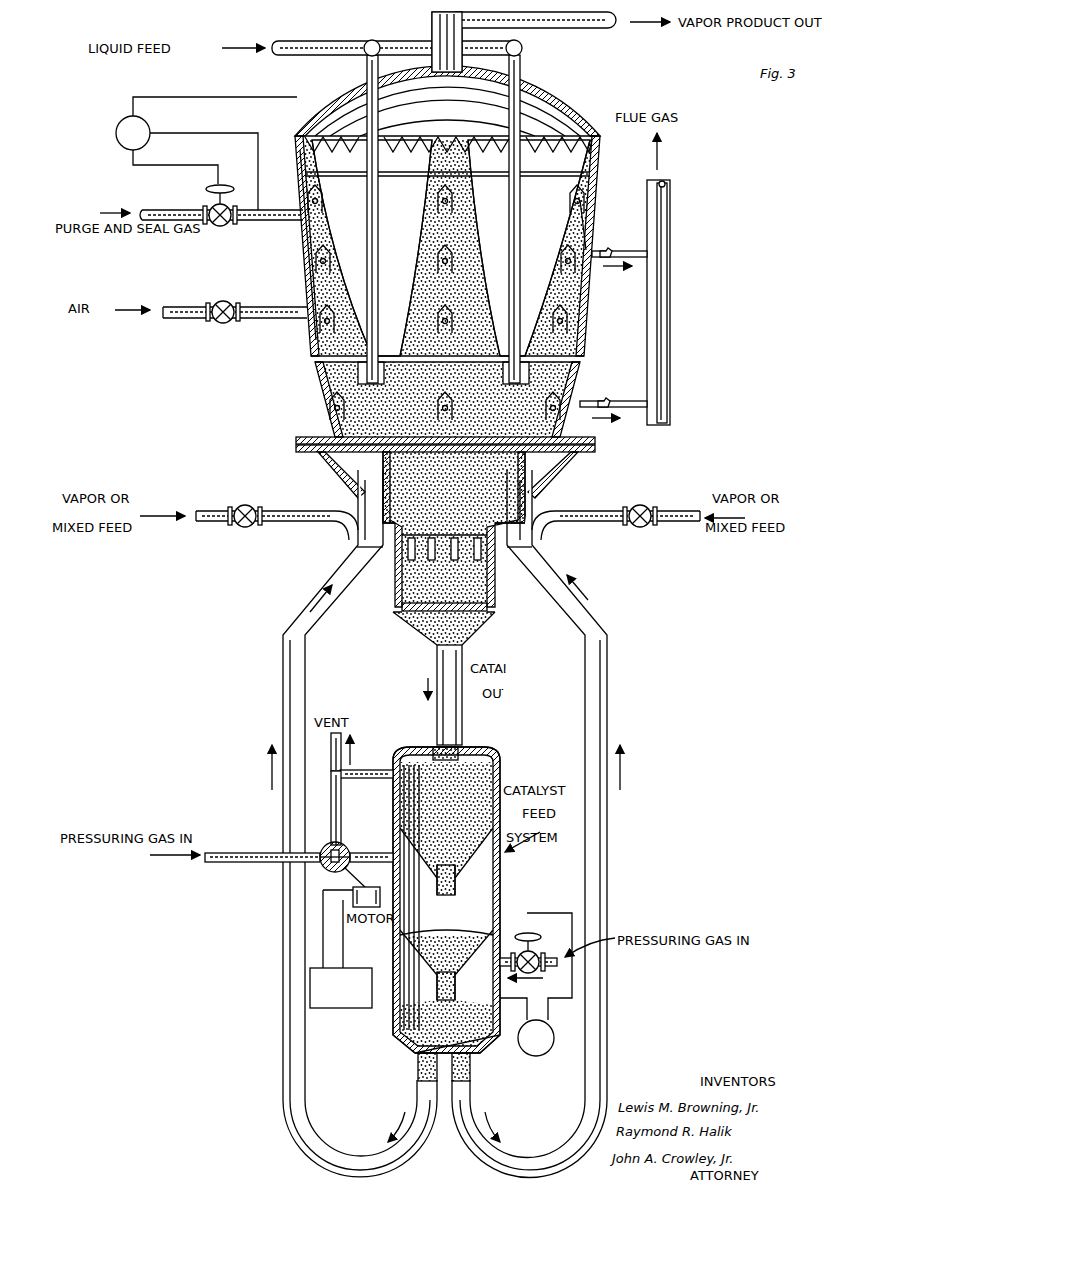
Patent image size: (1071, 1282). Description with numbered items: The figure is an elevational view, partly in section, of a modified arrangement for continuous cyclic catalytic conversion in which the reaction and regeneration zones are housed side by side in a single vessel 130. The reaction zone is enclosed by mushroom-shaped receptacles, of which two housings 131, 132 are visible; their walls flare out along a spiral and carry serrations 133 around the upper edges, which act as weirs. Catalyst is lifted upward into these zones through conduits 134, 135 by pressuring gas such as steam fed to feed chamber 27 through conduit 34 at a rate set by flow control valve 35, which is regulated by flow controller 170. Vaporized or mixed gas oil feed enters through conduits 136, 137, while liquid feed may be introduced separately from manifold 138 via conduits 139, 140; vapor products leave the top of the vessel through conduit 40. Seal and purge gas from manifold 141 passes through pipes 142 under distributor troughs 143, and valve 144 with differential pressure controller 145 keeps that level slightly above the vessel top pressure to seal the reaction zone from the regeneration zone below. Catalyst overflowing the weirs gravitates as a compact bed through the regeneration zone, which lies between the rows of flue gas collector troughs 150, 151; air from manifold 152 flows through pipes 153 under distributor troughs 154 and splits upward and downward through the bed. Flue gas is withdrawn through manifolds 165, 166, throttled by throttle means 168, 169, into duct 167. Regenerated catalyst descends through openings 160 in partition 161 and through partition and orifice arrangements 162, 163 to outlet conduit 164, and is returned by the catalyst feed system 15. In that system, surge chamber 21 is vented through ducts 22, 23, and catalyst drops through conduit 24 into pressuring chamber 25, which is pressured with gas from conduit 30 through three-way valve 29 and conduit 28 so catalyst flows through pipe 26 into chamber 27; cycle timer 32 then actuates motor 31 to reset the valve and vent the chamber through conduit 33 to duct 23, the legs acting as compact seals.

The catalyst feed system 15 is at (500, 762).
The surge chamber 21 is at (400, 820).
The duct 22 is at (362, 770).
The vent 23 is at (331, 748).
The conduit 24 is at (458, 878).
The pressuring chamber 25 is at (402, 943).
The pipe 26 is at (456, 975).
The feed chamber 27 is at (395, 1036).
The conduit 28 is at (380, 853).
The three-way valve 29 is at (330, 845).
The conduit 30 is at (242, 864).
The motor 31 is at (370, 887).
The cycle timer 32 is at (308, 987).
The conduit 33 is at (341, 797).
The conduit 34 is at (508, 958).
The flow control valve 35 is at (542, 945).
The conduit 40 is at (576, 28).
The vessel 130 is at (565, 110).
The mushroom-shaped receptacle 131 is at (596, 150).
The mushroom-shaped receptacle 132 is at (308, 278).
The serrations 133 is at (555, 138).
The conduit 134 is at (590, 601).
The conduit 135 is at (322, 616).
The conduit 136 is at (330, 511).
The conduit 137 is at (600, 516).
The manifold 138 is at (300, 42).
The conduit 139 is at (366, 71).
The conduit 140 is at (521, 70).
The manifold 141 is at (150, 208).
The pipes 142 is at (588, 221).
The distributor troughs 143 is at (593, 186).
The valve 144 is at (222, 228).
The differential pressure controller 145 is at (116, 126).
The flue gas collector troughs 150 is at (307, 254).
The flue gas collector troughs 151 is at (318, 381).
The manifold 152 is at (186, 322).
The pipes 153 is at (310, 342).
The distributor troughs 154 is at (312, 296).
The openings 160 is at (340, 461).
The partition 161 is at (596, 450).
The partition and orifice arrangement 162 is at (450, 540).
The partition and orifice arrangement 163 is at (497, 601).
The outlet conduit 164 is at (437, 667).
The flue gas outlet manifold 165 is at (619, 247).
The flue gas outlet manifold 166 is at (607, 412).
The duct 167 is at (670, 199).
The throttle means 168 is at (601, 262).
The throttle means 169 is at (606, 400).
The flow controller 170 is at (533, 1058).